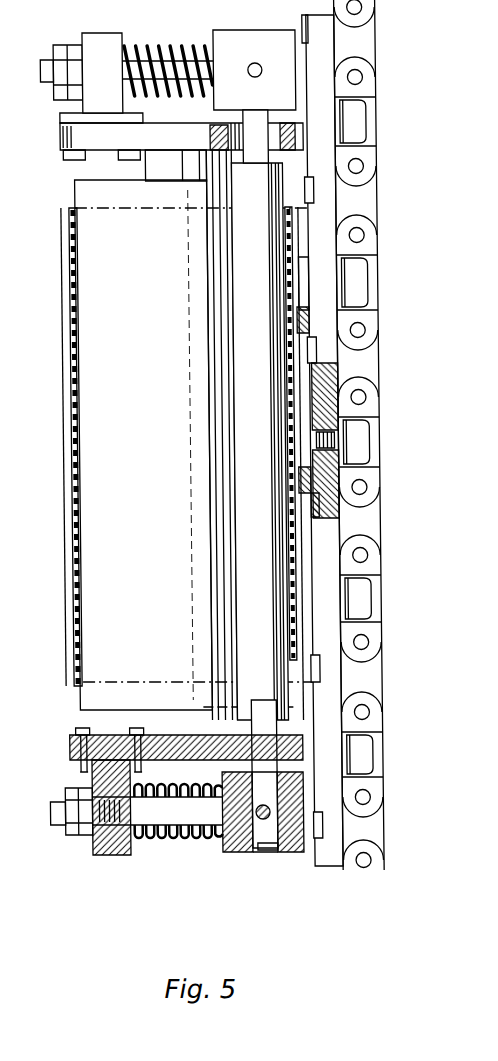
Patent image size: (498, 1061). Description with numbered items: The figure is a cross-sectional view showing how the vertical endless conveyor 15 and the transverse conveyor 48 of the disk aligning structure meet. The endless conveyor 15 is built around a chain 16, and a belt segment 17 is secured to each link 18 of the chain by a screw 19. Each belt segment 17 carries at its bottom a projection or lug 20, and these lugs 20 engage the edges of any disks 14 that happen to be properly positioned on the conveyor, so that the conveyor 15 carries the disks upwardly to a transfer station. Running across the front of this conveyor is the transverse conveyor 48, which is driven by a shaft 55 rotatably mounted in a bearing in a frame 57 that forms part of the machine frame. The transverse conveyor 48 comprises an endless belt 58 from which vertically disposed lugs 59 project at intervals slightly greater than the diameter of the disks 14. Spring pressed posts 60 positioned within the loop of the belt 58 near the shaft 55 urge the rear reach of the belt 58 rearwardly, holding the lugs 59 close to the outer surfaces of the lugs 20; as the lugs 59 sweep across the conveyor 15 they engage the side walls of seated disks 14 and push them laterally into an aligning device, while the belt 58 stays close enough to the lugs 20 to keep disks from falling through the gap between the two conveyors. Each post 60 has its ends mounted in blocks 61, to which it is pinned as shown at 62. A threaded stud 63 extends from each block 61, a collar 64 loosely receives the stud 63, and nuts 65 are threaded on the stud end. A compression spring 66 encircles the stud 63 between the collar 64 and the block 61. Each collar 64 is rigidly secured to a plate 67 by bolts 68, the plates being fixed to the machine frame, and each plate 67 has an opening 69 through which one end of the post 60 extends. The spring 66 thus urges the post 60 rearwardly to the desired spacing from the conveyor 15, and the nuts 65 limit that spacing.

The disks 14 is at (240, 362).
The endless conveyor 15 is at (382, 435).
The chain 16 is at (366, 249).
The belt segment 17 is at (325, 222).
The link 18 is at (375, 390).
The screw 19 is at (336, 439).
The lug 20 is at (288, 373).
The transverse conveyor 48 is at (70, 404).
The shaft 55 is at (168, 167).
The frame 57 is at (62, 136).
The endless belt 58 is at (78, 536).
The lugs 59 is at (65, 463).
The spring pressed post 60 is at (240, 336).
The block 61 is at (265, 40).
The pin 62 is at (255, 65).
The threaded stud 63 is at (55, 828).
The collar 64 is at (96, 38).
The nuts 65 is at (78, 838).
The compression spring 66 is at (157, 38).
The plate 67 is at (66, 158).
The bolts 68 is at (70, 160).
The opening 69 is at (233, 747).